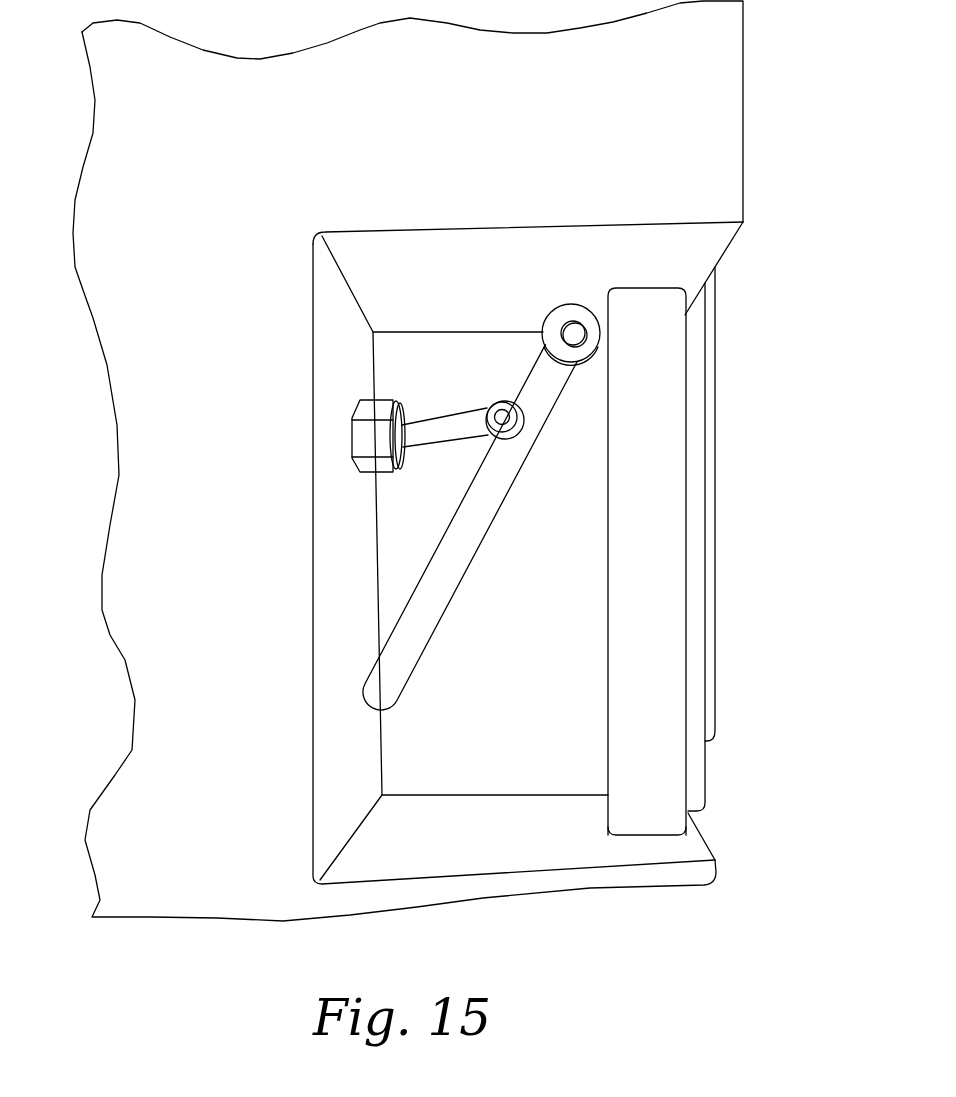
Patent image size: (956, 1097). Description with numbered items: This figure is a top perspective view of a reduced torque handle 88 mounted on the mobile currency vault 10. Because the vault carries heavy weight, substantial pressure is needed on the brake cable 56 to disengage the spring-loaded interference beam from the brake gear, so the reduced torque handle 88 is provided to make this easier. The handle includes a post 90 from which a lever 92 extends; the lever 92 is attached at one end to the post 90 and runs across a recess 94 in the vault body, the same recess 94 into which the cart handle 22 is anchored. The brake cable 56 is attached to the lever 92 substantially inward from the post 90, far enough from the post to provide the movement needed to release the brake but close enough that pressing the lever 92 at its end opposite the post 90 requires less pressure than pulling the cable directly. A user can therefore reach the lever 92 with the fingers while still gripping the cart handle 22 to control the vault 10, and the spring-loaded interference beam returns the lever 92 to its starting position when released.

The mobile currency vault 10 is at (667, 173).
The cart handle 22 is at (653, 517).
The brake cable 56 is at (463, 428).
The reduced torque handle 88 is at (748, 608).
The post 90 is at (555, 318).
The lever 92 is at (418, 620).
The recess 94 is at (492, 710).